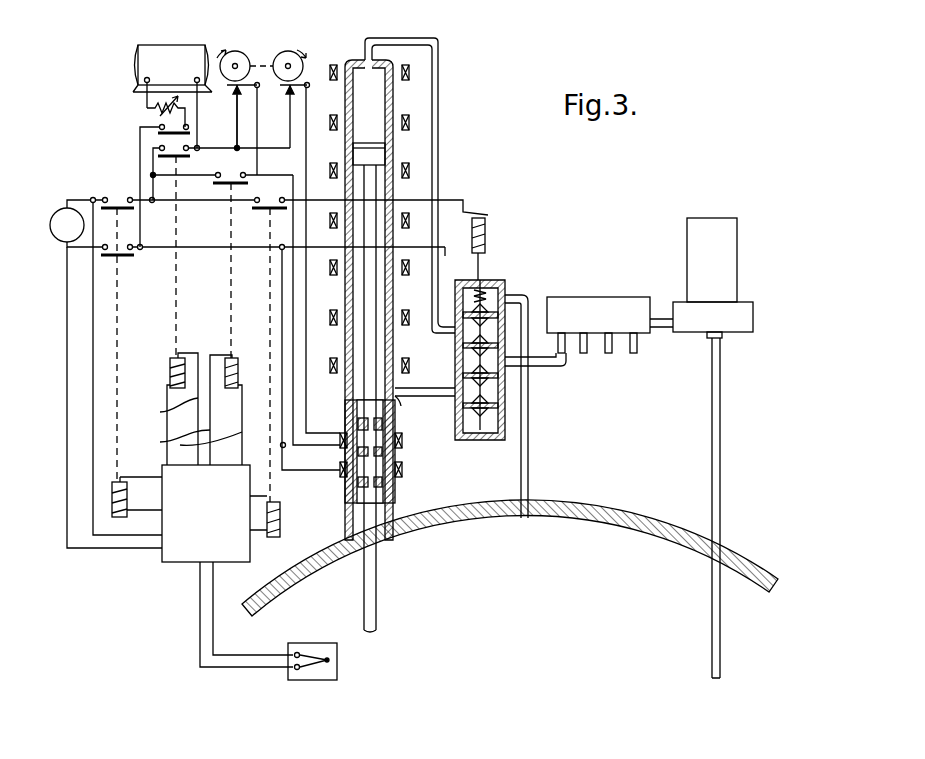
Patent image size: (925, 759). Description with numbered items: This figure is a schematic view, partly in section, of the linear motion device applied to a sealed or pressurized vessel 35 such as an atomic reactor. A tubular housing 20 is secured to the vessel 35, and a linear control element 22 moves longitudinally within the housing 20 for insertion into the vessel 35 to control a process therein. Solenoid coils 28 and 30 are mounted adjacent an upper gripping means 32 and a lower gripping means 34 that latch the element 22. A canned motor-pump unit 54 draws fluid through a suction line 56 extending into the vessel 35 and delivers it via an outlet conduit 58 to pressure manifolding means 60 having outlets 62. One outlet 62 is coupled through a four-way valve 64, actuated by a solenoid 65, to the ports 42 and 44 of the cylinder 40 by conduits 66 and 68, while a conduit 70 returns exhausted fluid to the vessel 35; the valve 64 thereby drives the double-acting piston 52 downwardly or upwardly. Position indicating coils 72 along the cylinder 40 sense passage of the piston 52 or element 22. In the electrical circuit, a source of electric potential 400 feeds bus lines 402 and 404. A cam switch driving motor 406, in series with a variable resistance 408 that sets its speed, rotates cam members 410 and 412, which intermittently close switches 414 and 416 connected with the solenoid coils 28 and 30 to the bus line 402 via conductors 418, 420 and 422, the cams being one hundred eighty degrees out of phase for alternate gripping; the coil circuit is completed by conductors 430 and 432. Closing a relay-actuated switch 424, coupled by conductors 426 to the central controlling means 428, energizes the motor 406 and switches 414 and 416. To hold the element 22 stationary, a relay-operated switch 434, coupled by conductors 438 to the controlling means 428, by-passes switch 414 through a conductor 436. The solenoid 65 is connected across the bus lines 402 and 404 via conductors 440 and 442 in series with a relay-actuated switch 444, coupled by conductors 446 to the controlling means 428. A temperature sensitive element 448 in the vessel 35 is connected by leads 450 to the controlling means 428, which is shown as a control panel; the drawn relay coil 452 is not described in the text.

The tubular housing 20 is at (350, 425).
The linear control element 22 is at (377, 292).
The solenoid coil 28 is at (402, 440).
The solenoid coil 30 is at (402, 472).
The upper gripping means 32 is at (385, 421).
The lower gripping means 34 is at (385, 452).
The pressurized vessel 35 is at (599, 505).
The cylinder 40 is at (393, 98).
The port 42 is at (365, 52).
The port 44 is at (400, 400).
The double-acting piston 52 is at (385, 152).
The canned motor-pump unit 54 is at (738, 270).
The suction line 56 is at (720, 497).
The outlet conduit 58 is at (662, 317).
The pressure manifolding means 60 is at (603, 297).
The outlets 62 is at (556, 352).
The four-way valve 64 is at (498, 285).
The solenoid 65 is at (487, 235).
The conduit 66 is at (440, 105).
The conduit 68 is at (436, 384).
The conduit 70 is at (528, 450).
The position indicating coils 72 is at (407, 70).
The source of electric potential 400 is at (58, 215).
The bus line 402 is at (153, 175).
The bus line 404 is at (152, 148).
The cam switch driving motor 406 is at (158, 42).
The variable resistance 408 is at (156, 112).
The rotatable cam member 410 is at (246, 42).
The rotatable cam member 412 is at (287, 51).
The cam switch 414 is at (236, 94).
The cam switch 416 is at (290, 94).
The conductor 418 is at (237, 128).
The conductor 420 is at (257, 136).
The conductor 422 is at (293, 174).
The relay-actuated switch 424 is at (172, 362).
The conductors 426 is at (161, 409).
The central controlling means 428 is at (185, 565).
The conductor 430 is at (205, 247).
The conductor 432 is at (328, 476).
The relay-operated switch 434 is at (232, 178).
The conductor 436 is at (306, 414).
The conductors 438 is at (183, 440).
The conductor 440 is at (455, 260).
The conductor 442 is at (462, 202).
The relay-actuated switch 444 is at (270, 202).
The conductors 446 is at (268, 540).
The temperature sensitive element 448 is at (338, 672).
The leads 450 is at (246, 662).
The relay coil 452 is at (118, 520).